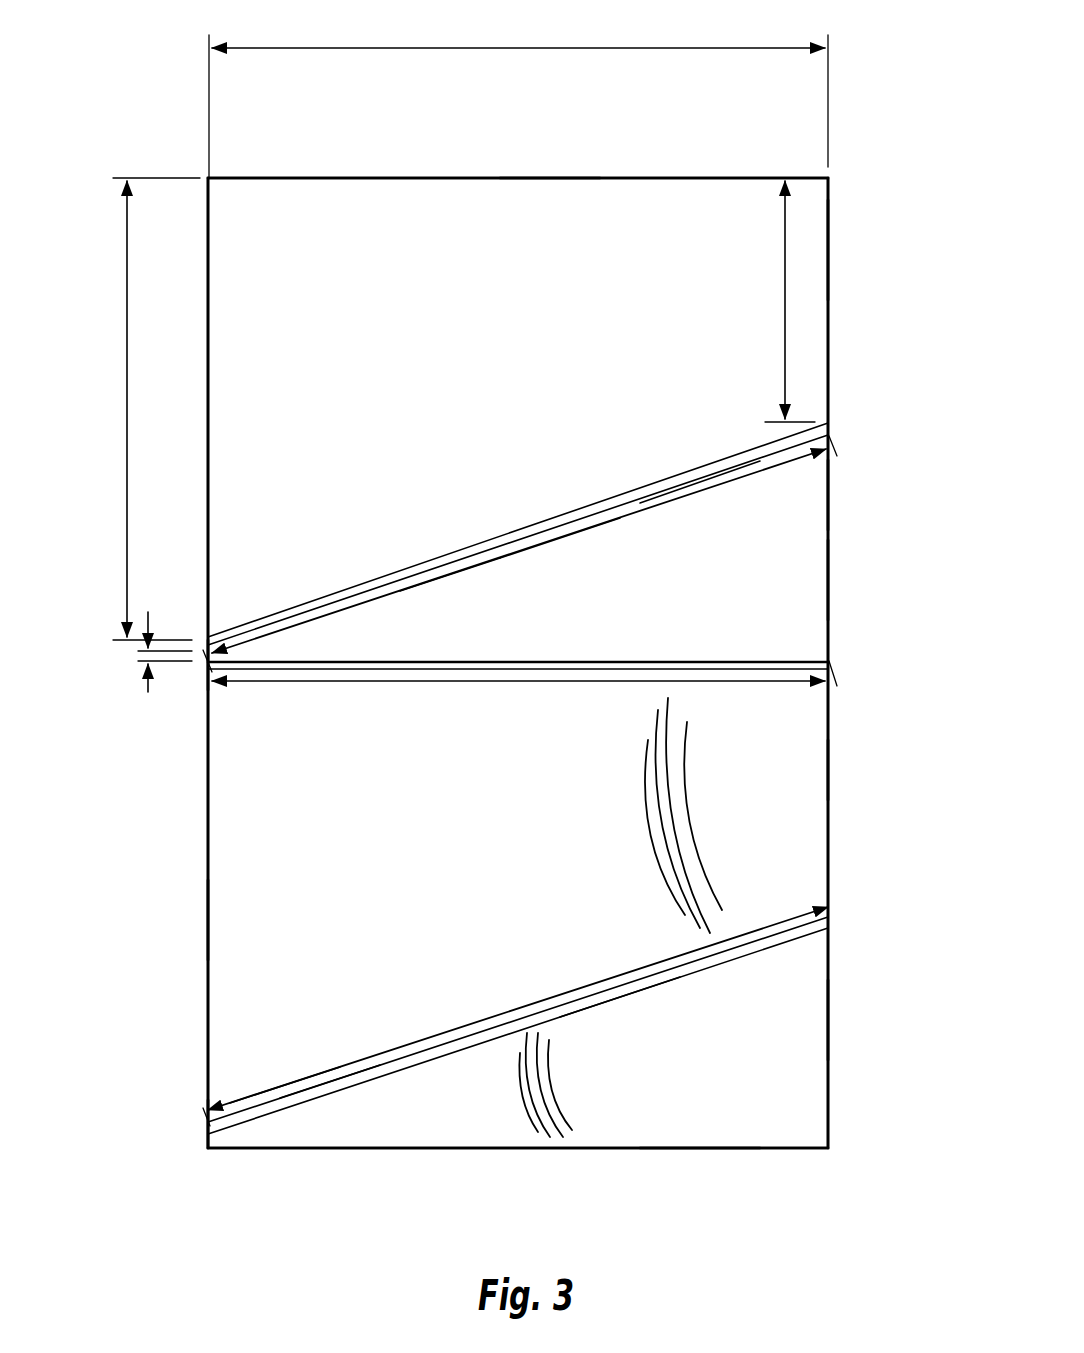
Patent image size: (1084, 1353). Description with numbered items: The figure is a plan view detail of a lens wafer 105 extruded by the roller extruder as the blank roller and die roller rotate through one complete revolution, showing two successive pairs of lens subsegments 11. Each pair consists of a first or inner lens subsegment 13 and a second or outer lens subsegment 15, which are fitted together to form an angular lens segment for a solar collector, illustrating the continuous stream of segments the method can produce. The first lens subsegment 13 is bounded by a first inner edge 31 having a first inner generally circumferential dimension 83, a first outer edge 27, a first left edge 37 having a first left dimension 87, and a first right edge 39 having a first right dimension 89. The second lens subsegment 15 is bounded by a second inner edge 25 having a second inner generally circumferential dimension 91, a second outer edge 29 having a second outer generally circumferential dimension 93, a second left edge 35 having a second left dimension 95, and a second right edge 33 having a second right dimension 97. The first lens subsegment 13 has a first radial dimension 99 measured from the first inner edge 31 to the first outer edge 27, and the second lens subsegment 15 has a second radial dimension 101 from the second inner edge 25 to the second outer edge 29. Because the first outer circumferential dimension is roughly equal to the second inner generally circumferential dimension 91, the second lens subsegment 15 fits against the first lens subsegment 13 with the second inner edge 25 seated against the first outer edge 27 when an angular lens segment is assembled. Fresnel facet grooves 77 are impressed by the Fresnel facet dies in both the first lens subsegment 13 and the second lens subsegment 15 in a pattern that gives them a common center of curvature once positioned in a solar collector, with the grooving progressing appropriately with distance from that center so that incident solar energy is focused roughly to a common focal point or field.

The pair of lens subsegments 11 is at (441, 178).
The first lens subsegment 13 is at (800, 505).
The second lens subsegment 15 is at (504, 195).
The second inner edge 25 is at (828, 328).
The first outer edge 27 is at (828, 580).
The second outer edge 29 is at (208, 382).
The first inner edge 31 is at (208, 660).
The second right edge 33 is at (336, 178).
The second left edge 35 is at (436, 560).
The first left edge 37 is at (690, 482).
The first right edge 39 is at (357, 662).
The Fresnel facet grooves 77 is at (688, 733).
The first inner generally circumferential dimension 83 is at (148, 691).
The first left dimension 87 is at (555, 540).
The first right dimension 89 is at (470, 684).
The second inner generally circumferential dimension 91 is at (776, 292).
The second outer generally circumferential dimension 93 is at (127, 463).
The second left dimension 95 is at (283, 1087).
The second right dimension 97 is at (372, 48).
The first radial dimension 99 is at (455, 577).
The second radial dimension 101 is at (328, 1070).
The lens wafer 105 is at (828, 258).